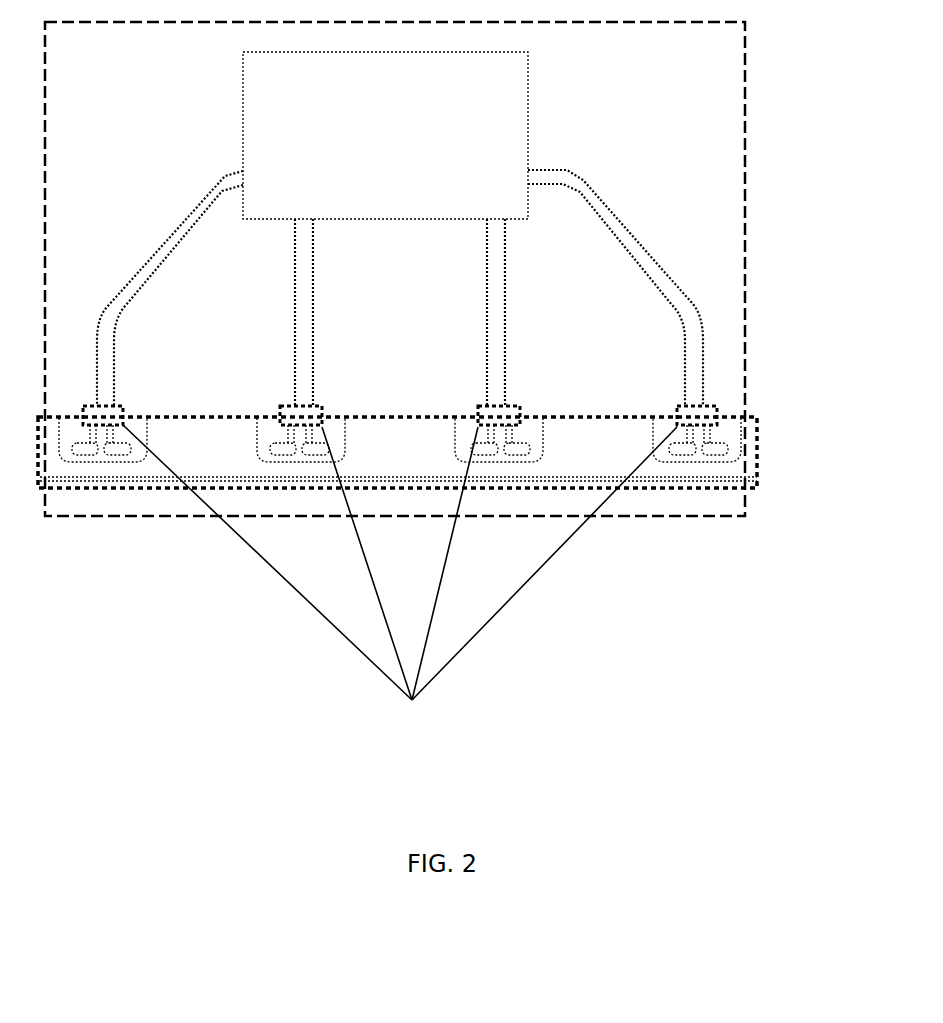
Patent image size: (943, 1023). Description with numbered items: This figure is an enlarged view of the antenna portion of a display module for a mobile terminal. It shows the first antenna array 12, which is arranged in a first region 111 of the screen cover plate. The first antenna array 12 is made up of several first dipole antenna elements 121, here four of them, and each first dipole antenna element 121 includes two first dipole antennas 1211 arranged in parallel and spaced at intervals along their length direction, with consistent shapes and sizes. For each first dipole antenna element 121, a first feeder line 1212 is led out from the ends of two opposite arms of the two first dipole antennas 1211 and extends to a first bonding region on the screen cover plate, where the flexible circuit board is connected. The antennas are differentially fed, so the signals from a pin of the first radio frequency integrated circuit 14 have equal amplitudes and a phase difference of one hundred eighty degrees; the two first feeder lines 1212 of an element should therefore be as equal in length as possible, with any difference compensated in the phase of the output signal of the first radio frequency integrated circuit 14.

The first antenna array 12 is at (400, 569).
The first radio frequency integrated circuit 14 is at (528, 89).
The first region 111 is at (757, 452).
The first dipole antenna element 121 is at (400, 512).
The first dipole antenna 1211 is at (83, 455).
The first feeder line 1212 is at (662, 268).